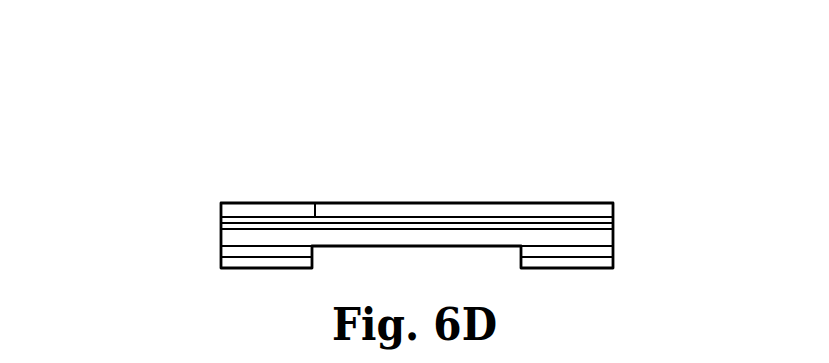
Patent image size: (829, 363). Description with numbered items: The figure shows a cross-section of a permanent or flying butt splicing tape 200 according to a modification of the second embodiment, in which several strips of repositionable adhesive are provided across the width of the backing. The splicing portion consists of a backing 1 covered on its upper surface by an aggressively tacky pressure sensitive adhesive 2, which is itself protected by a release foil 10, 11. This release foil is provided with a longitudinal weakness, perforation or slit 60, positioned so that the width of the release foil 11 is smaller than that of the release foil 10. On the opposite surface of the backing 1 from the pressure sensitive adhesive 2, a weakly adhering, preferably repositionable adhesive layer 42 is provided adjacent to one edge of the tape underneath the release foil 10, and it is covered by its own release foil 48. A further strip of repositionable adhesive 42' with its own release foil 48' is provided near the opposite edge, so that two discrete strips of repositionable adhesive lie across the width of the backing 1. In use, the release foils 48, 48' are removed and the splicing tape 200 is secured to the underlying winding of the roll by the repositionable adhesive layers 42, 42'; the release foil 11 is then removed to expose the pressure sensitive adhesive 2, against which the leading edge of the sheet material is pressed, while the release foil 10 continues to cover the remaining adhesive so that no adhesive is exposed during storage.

The splicing tape 200 is at (412, 152).
The release foil 10 is at (491, 203).
The release foil 11 is at (294, 212).
The longitudinal weakness, perforation or slit 60 is at (317, 211).
The pressure sensitive adhesive 2 is at (230, 223).
The backing 1 is at (422, 238).
The repositionable adhesive layer 42 is at (588, 226).
The release foil 48 is at (567, 284).
The repositionable adhesive layer 42' is at (266, 277).
The release foil 48' is at (266, 295).